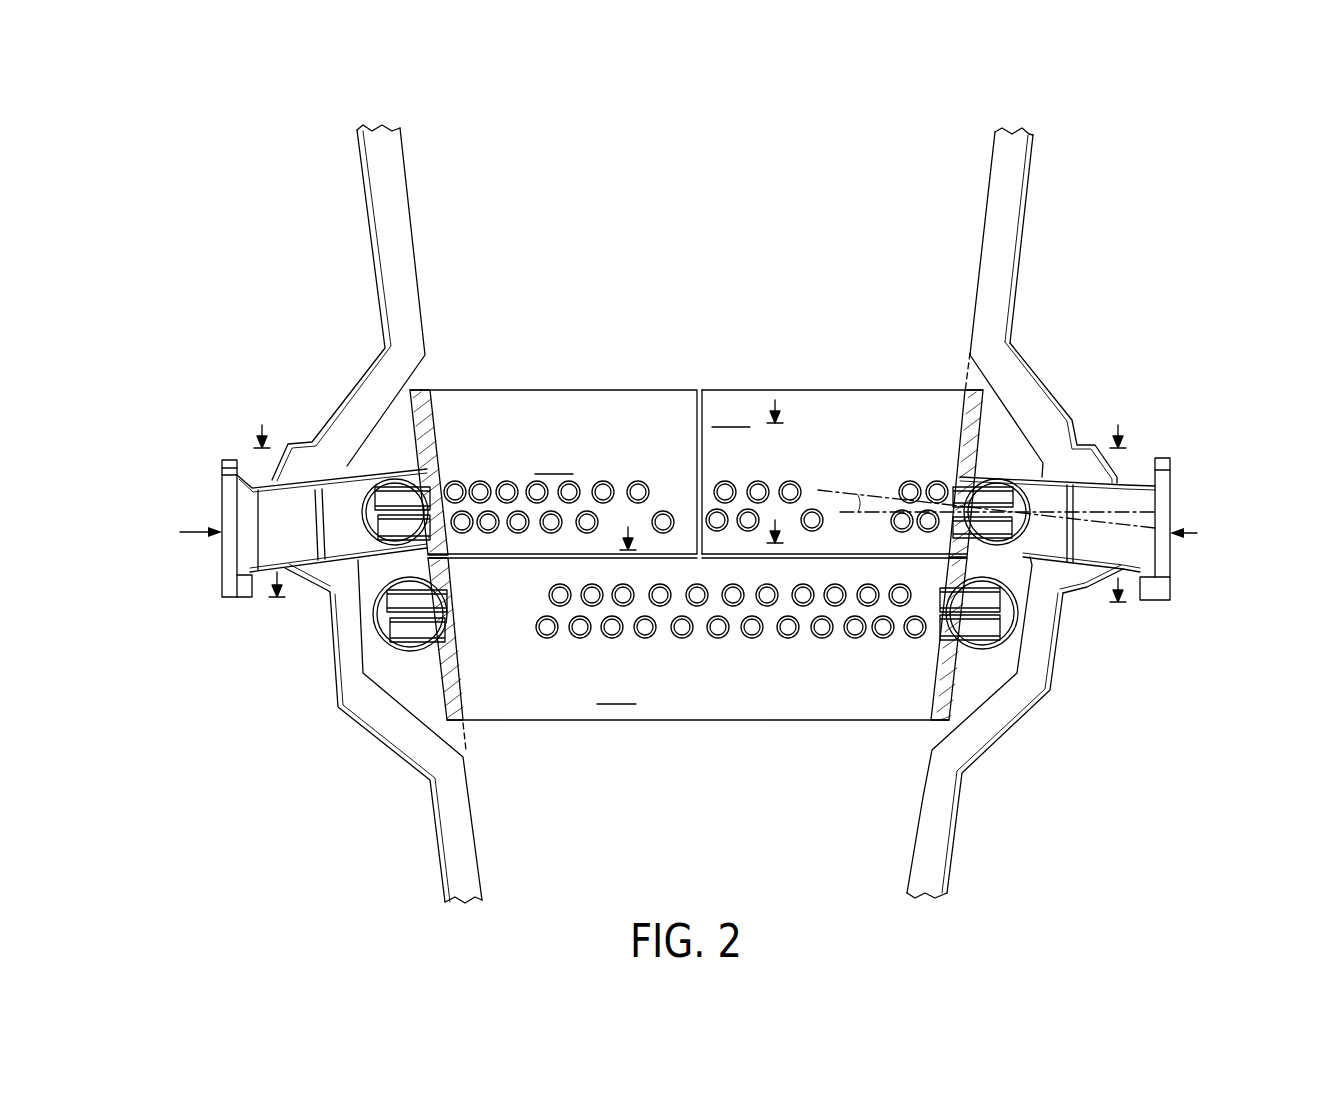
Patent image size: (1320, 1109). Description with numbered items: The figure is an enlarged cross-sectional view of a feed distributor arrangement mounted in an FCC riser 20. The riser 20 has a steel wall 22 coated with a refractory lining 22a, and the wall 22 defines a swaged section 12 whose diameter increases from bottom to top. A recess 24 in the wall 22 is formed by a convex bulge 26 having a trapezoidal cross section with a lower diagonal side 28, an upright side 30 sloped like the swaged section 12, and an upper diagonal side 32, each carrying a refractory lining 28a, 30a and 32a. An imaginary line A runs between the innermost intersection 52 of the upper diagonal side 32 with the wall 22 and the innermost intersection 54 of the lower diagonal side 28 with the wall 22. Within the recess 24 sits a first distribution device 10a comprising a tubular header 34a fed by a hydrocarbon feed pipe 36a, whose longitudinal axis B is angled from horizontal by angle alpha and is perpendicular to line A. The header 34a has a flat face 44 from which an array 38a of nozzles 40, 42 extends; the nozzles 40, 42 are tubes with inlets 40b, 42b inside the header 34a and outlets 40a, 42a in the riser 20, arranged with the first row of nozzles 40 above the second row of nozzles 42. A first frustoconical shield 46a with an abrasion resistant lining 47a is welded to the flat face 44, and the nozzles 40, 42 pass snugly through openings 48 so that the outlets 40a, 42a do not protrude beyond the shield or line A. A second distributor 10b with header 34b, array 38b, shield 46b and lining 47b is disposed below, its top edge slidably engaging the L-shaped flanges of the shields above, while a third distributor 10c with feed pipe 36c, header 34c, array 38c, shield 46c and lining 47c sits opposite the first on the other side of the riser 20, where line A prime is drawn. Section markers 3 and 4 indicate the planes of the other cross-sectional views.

The first distribution device 10a is at (1028, 510).
The second distributor 10b is at (658, 659).
The third distributor 10c is at (273, 475).
The swaged section 12 is at (1022, 305).
The riser 20 is at (1068, 192).
The wall 22 is at (1030, 241).
The refractory lining 22a is at (1010, 250).
The recess 24 is at (1051, 407).
The convex bulge 26 is at (1009, 727).
The lower diagonal side 28 is at (1002, 743).
The refractory lining 28a is at (1018, 717).
The upright side 30 is at (1062, 652).
The refractory lining 30a is at (1050, 703).
The upper diagonal side 32 is at (1070, 422).
The refractory lining 32a is at (1013, 362).
The tubular header 34a is at (1025, 490).
The tubular header 34b is at (412, 655).
The tubular header 34c is at (347, 472).
The hydrocarbon feed pipe 36a is at (1126, 480).
The hydrocarbon feed pipe 36c is at (293, 573).
The array of nozzles 38a is at (757, 482).
The array of nozzles 38b is at (467, 738).
The array of nozzles 38c is at (668, 482).
The nozzles 40 is at (608, 480).
The outlets 40a is at (952, 488).
The inlets 40b is at (1030, 497).
The nozzles 42 is at (588, 534).
The outlets 42a is at (866, 592).
The inlets 42b is at (1030, 528).
The flat face 44 is at (437, 543).
The first frustoconical shield 46a is at (940, 473).
The second frustoconical shield 46b is at (697, 642).
The third frustoconical shield 46c is at (449, 452).
The abrasion resistant lining 47a is at (965, 408).
The abrasion resistant lining 47b is at (455, 678).
The abrasion resistant lining 47c is at (430, 408).
The openings 48 is at (452, 650).
The innermost intersection 52 is at (968, 352).
The innermost intersection 54 is at (925, 757).
The section segment 3- 3 is at (695, 424).
The section arc 4- 4 is at (696, 562).